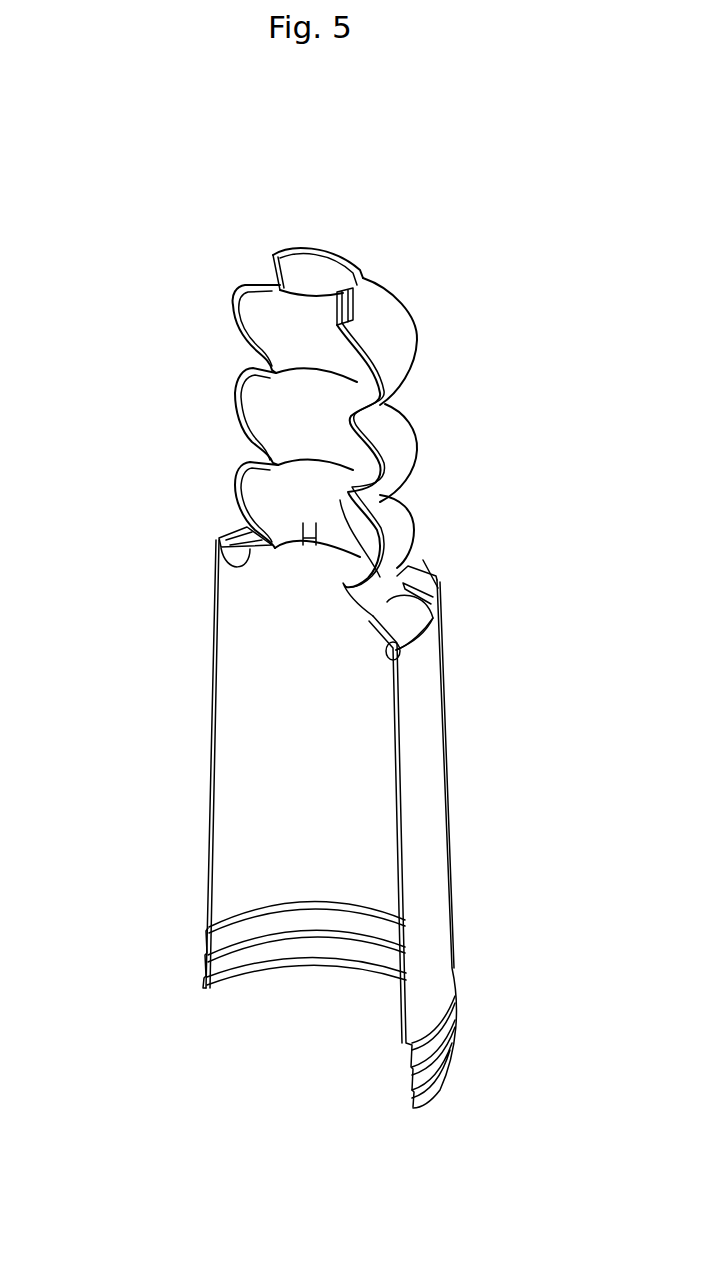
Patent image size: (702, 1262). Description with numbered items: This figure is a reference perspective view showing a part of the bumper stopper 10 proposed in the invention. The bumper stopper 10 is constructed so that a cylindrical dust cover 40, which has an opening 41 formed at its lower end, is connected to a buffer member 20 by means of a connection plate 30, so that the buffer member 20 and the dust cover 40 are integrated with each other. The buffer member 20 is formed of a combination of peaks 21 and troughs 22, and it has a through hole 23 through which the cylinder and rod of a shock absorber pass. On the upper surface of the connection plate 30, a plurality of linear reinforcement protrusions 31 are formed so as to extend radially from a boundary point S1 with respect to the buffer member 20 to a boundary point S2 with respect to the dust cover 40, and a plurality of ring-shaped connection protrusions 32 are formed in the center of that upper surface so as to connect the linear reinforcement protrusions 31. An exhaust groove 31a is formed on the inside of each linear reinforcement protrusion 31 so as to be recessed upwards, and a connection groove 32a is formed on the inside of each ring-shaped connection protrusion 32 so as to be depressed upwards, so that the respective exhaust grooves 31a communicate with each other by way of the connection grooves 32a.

The bumper stopper 10 is at (306, 214).
The buffer member 20 is at (436, 427).
The peaks 21 is at (233, 303).
The troughs 22 is at (266, 358).
The through hole 23 is at (330, 265).
The connection plate 30 is at (424, 545).
The linear reinforcement protrusions 31 is at (430, 577).
The exhaust groove 31a is at (313, 548).
The ring-shaped connection protrusions 32 is at (250, 532).
The connection groove 32a is at (213, 567).
The boundary point S1 is at (360, 557).
The boundary point S2 is at (382, 662).
The dust cover 40 is at (190, 877).
The opening 41 is at (237, 987).